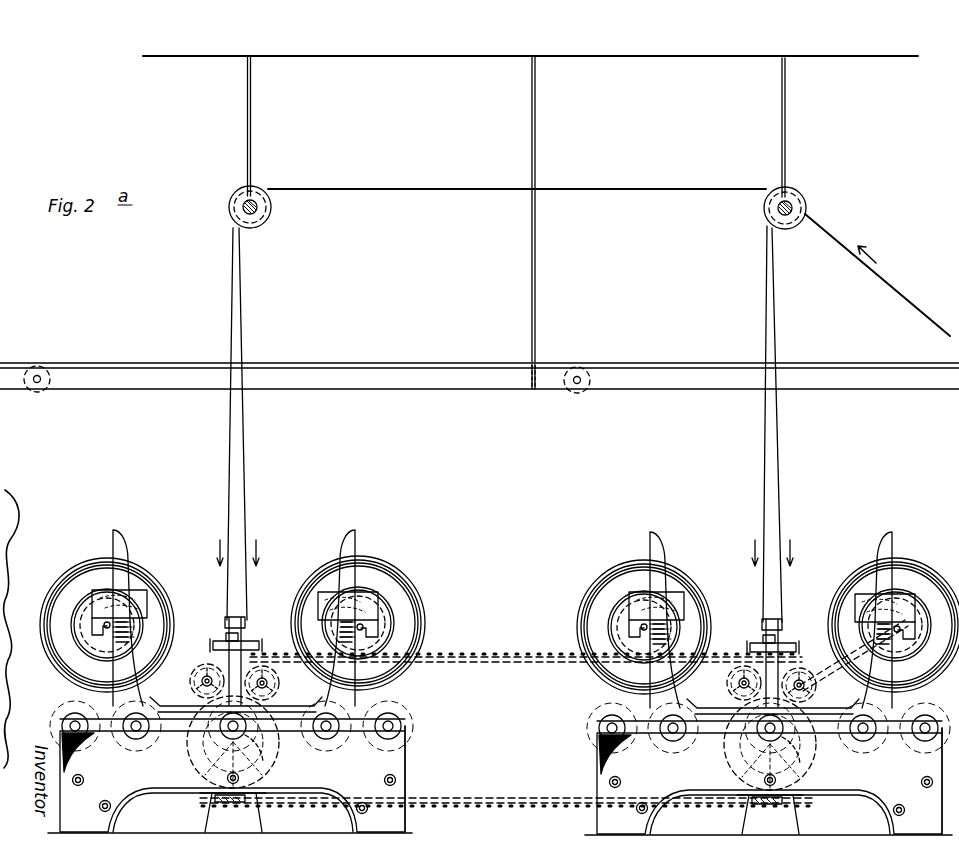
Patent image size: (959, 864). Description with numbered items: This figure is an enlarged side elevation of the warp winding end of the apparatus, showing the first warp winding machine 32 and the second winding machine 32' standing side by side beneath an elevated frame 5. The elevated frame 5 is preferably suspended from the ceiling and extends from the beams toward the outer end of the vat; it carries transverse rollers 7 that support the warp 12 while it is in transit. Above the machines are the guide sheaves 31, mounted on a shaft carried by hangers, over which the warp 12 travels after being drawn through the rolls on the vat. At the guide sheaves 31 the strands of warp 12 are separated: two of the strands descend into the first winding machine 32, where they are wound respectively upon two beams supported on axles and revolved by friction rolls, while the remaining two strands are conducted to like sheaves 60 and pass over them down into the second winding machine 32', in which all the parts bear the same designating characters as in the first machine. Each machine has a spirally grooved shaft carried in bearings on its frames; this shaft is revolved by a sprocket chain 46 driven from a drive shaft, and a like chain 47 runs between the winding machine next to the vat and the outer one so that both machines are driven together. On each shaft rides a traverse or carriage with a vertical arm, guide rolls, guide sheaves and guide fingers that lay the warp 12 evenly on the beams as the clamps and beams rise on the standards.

The elevated frame 5 is at (388, 379).
The transverse rollers 7 is at (38, 367).
The warp thread 12 is at (909, 299).
The guide sheaves 31 is at (780, 194).
The warp winding machine 32 is at (752, 778).
The second winding machine 32' is at (424, 779).
The sprocket chain 46 is at (854, 655).
The chain 47 is at (579, 719).
The sheaves 60 is at (256, 231).